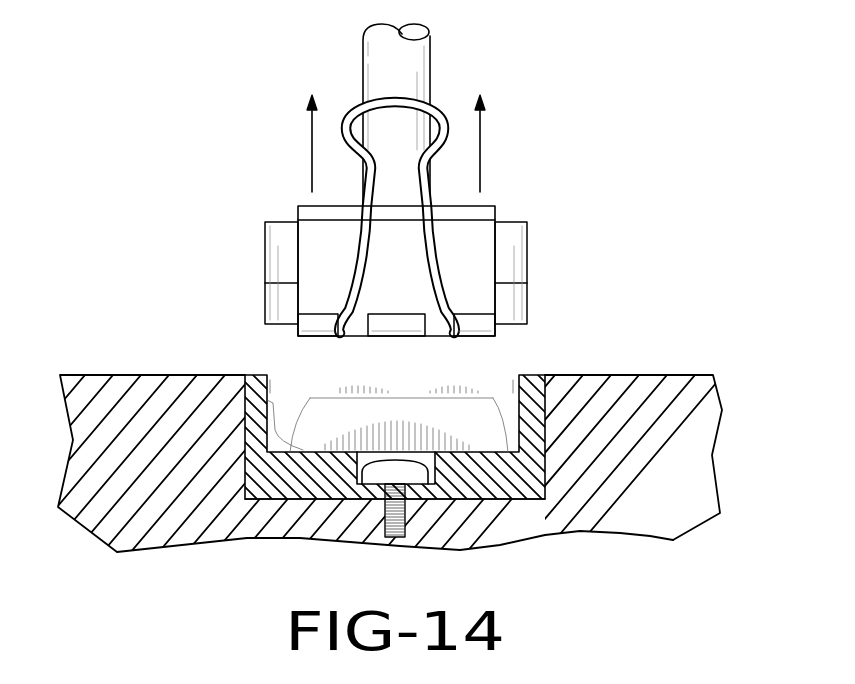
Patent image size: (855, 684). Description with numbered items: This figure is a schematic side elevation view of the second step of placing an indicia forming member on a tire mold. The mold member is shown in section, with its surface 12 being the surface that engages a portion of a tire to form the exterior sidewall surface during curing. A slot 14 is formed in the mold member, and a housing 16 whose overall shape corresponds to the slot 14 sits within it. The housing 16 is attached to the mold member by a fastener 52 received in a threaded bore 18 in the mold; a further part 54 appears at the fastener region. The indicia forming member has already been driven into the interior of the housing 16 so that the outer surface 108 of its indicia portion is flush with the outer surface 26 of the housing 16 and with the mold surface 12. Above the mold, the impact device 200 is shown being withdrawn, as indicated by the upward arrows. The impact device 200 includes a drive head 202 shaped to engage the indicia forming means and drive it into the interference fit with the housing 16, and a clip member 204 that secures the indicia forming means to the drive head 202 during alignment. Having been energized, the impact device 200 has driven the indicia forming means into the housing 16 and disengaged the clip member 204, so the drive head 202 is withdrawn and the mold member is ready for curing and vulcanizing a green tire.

The surface 12 is at (626, 375).
The slot 14 is at (250, 485).
The housing 16 is at (542, 489).
The threaded bore 18 is at (387, 519).
The outer surface 26 is at (254, 375).
The fastener 52 is at (372, 468).
The threaded portion 54 is at (402, 499).
The outer surface 108 is at (420, 375).
The impact device 200 is at (430, 75).
The drive head 202 is at (285, 306).
The clip member 204 is at (322, 217).